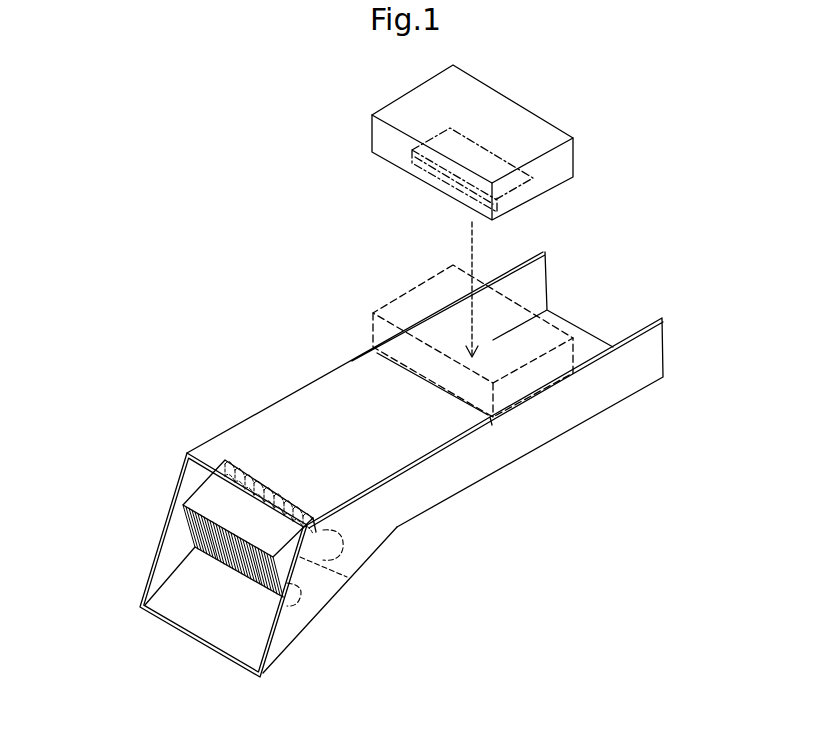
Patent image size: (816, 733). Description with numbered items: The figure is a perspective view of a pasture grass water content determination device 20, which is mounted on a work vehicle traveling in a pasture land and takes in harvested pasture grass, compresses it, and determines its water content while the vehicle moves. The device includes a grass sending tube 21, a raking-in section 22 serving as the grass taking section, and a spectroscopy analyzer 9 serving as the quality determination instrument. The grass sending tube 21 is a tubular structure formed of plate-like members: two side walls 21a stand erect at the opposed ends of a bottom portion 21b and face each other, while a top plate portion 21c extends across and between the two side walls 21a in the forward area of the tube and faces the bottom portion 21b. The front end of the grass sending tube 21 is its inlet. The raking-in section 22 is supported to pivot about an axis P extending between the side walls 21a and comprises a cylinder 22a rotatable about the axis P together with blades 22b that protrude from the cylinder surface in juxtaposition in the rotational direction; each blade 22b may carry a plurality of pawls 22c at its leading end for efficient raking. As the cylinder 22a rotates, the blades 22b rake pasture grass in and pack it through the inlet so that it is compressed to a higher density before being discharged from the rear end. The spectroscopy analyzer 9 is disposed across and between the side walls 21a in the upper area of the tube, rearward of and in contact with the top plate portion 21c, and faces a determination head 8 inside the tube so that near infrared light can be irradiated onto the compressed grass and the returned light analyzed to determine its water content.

The determination head 8 is at (530, 206).
The spectroscopy analyzer 9 is at (518, 116).
The pasture grass water content determination device 20 is at (288, 277).
The grass sending tube 21 is at (293, 387).
The side wall 21a is at (587, 393).
The bottom portion 21b is at (240, 668).
The top plate portion 21c is at (347, 402).
The raking-in section 22 is at (227, 573).
The cylinder 22a is at (217, 483).
The blade 22b is at (185, 504).
The pawl 22c is at (293, 572).
The axis P is at (173, 487).